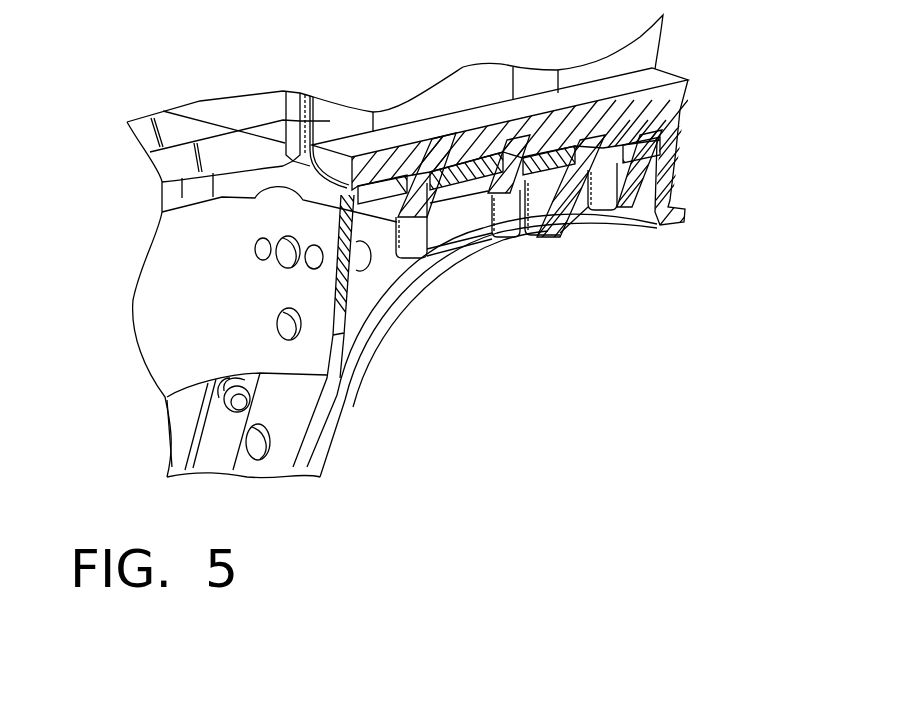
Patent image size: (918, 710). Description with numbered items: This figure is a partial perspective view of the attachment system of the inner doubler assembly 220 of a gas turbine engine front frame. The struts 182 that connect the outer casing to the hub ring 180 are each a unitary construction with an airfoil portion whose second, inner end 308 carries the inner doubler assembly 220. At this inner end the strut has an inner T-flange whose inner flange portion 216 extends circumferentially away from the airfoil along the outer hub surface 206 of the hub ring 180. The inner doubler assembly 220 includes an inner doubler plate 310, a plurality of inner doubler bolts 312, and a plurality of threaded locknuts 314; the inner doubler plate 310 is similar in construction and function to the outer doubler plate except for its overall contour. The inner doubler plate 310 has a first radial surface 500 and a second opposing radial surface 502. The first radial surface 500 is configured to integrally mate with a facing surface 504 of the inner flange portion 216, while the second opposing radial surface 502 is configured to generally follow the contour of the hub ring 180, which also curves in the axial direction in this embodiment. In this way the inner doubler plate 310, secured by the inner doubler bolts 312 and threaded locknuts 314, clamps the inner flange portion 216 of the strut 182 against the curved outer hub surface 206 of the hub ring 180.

The hub ring 180 is at (675, 180).
The struts 182 is at (665, 40).
The outer hub surface 206 is at (257, 198).
The inner flange portion 216 is at (672, 118).
The inner doubler assembly 220 is at (606, 284).
The inner end 308 is at (283, 120).
The inner doubler plate 310 is at (685, 88).
The inner doubler bolts 312 is at (410, 245).
The threaded locknuts 314 is at (462, 256).
The first radial surface 500 is at (552, 125).
The second opposing radial surface 502 is at (333, 100).
The facing surface 504 is at (556, 140).